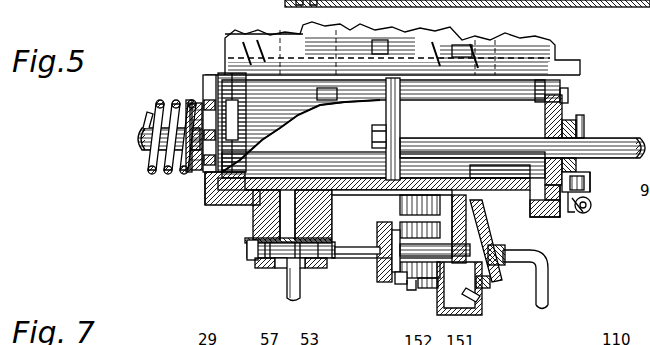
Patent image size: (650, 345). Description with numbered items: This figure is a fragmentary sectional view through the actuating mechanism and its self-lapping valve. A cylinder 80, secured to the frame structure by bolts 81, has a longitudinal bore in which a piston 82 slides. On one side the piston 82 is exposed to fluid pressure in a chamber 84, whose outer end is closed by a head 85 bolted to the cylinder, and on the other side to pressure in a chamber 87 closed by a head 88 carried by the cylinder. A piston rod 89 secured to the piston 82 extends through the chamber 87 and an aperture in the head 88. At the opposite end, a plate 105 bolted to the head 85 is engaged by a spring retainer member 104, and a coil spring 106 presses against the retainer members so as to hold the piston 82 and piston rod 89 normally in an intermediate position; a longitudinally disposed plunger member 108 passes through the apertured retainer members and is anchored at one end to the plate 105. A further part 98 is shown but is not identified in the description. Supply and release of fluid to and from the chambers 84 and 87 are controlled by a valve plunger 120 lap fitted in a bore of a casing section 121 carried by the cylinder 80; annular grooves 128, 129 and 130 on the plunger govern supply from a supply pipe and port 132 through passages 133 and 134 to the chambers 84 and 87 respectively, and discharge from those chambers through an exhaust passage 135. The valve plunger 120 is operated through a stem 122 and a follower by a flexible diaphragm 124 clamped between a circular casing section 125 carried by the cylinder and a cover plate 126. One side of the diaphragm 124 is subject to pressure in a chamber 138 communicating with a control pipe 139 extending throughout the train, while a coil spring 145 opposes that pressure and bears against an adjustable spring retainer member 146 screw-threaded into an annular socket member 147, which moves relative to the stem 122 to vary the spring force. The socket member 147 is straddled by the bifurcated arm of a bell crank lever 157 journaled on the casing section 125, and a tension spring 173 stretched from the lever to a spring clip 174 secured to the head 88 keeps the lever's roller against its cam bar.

The bolts 81 is at (410, 25).
The chamber 84 is at (298, 122).
The piston 82 is at (400, 128).
The piston rod 89 is at (637, 141).
The head 88 is at (568, 116).
The chamber 87 is at (517, 182).
The spring clip 174 is at (590, 198).
The tension spring 173 is at (591, 209).
The plunger member 108 is at (150, 137).
The coil spring 106 is at (147, 162).
The plate 105 is at (208, 112).
The spring retainer member 104 is at (196, 172).
The clutch rail 98 is at (205, 168).
The head 85 is at (226, 96).
The passage 133 is at (238, 200).
The exhaust passage 135 is at (256, 233).
The cylinder 80 is at (357, 205).
The passage 134 is at (398, 205).
The circular casing section 125 is at (462, 313).
The cover plate 126 is at (488, 285).
The flexible diaphragm 124 is at (478, 294).
The chamber 138 is at (508, 257).
The control pipe 139 is at (548, 294).
The annular socket member 147 is at (384, 236).
The valve plunger 120 is at (248, 256).
The stem 122 is at (345, 257).
The annular groove 128 is at (268, 267).
The annular groove 129 is at (281, 270).
The supply pipe and port 132 is at (292, 282).
The annular groove 130 is at (314, 268).
The casing section 121 is at (308, 263).
The adjustable spring retainer member 146 is at (402, 282).
The bell crank lever 157 is at (410, 290).
The coil spring 145 is at (432, 288).